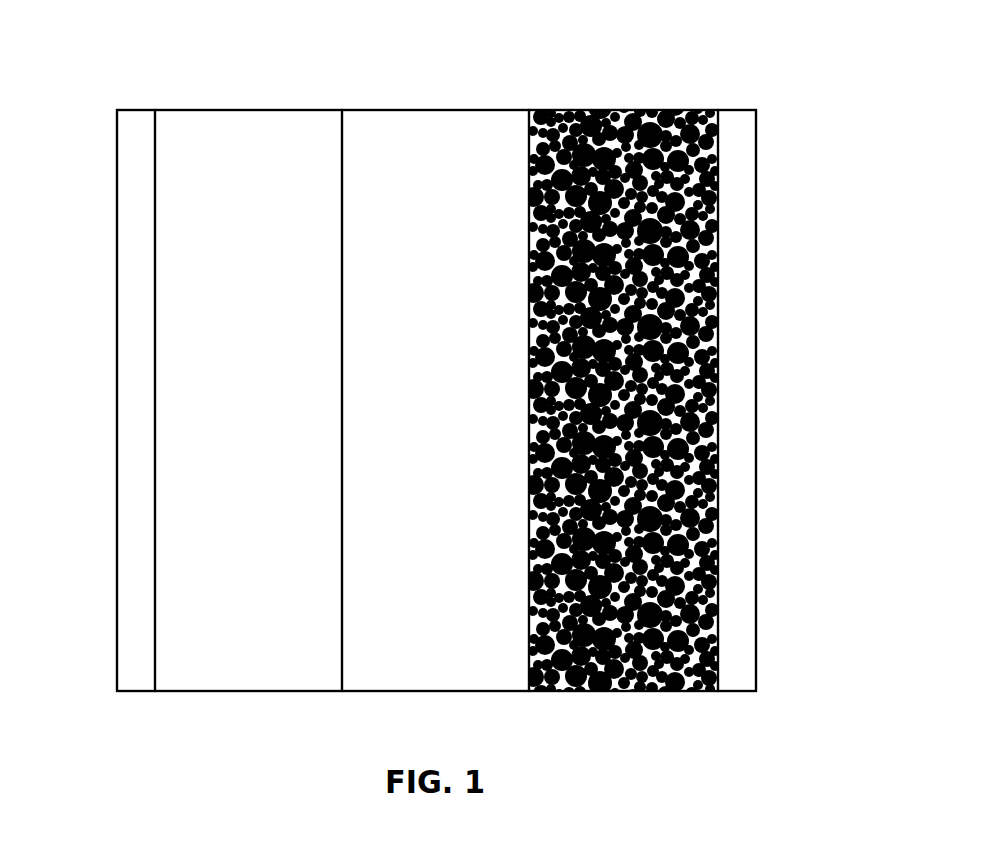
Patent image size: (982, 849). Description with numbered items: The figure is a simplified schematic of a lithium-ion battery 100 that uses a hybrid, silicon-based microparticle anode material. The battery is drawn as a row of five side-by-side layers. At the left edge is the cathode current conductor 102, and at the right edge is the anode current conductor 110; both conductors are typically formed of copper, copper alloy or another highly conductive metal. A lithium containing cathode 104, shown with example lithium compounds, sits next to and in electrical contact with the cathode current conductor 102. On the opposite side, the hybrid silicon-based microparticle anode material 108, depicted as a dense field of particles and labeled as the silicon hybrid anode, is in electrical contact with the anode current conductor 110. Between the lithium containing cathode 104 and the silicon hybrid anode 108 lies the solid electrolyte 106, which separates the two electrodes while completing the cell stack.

The lithium-ion battery 100 is at (299, 40).
The cathode current conductor 102 is at (117, 242).
The lithium containing cathode 104 is at (236, 110).
The solid electrolyte 106 is at (470, 110).
The hybrid silicon-based microparticle anode material 108 is at (643, 110).
The anode current conductor 110 is at (755, 236).